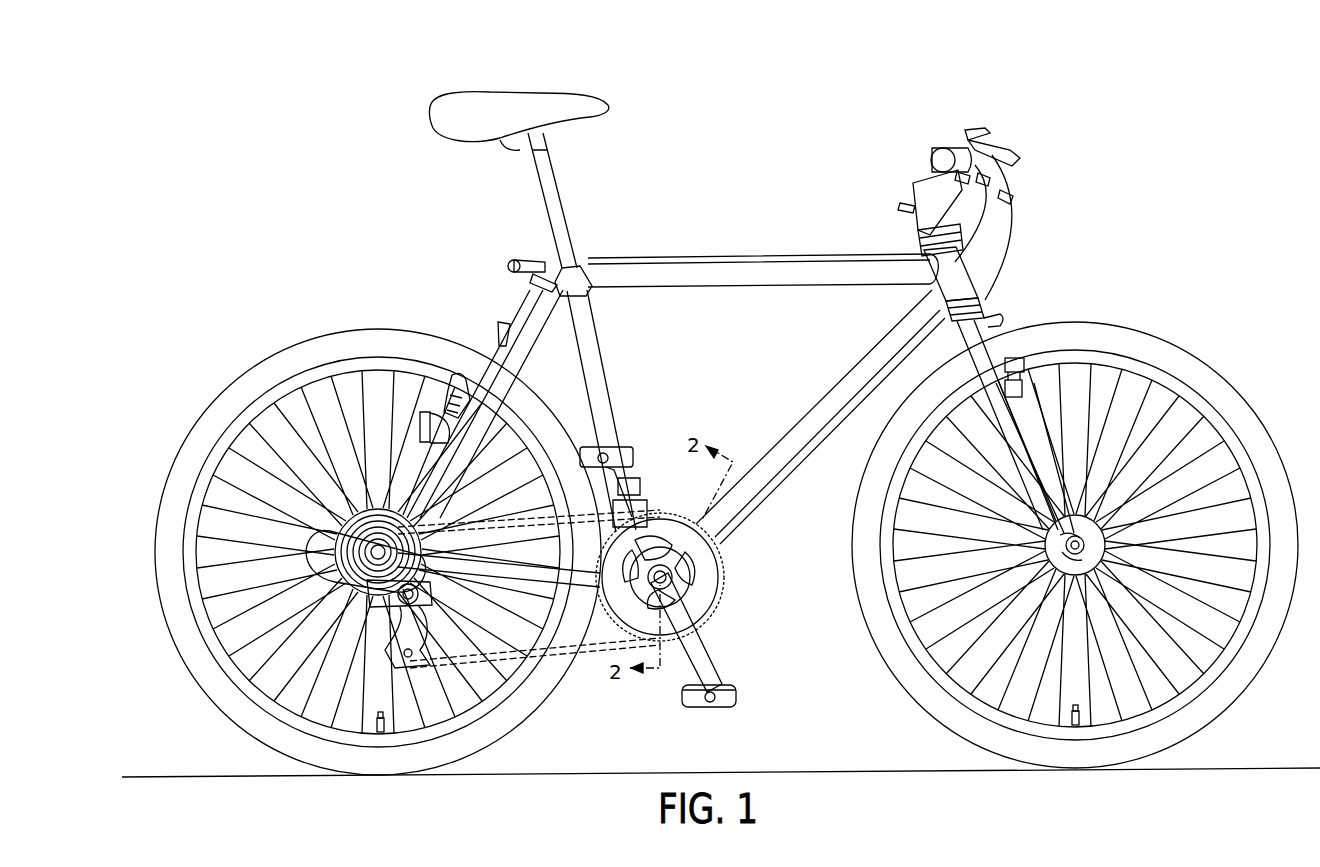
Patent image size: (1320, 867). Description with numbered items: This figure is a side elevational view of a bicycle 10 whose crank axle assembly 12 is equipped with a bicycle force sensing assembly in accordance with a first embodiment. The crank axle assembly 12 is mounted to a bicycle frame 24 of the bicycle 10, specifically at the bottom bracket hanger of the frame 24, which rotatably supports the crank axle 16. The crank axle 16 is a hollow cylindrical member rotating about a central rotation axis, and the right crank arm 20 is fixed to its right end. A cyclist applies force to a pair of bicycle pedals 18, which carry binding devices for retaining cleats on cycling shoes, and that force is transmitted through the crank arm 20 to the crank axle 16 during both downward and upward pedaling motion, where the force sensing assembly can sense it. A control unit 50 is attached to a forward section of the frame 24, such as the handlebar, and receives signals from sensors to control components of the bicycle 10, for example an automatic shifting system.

The bicycle 10 is at (912, 92).
The crank axle assembly 12 is at (718, 640).
The crank axle 16 is at (678, 572).
The bicycle pedals 18 is at (732, 697).
The crank arm 20 is at (682, 668).
The bicycle frame 24 is at (827, 412).
The control unit 50 is at (967, 131).